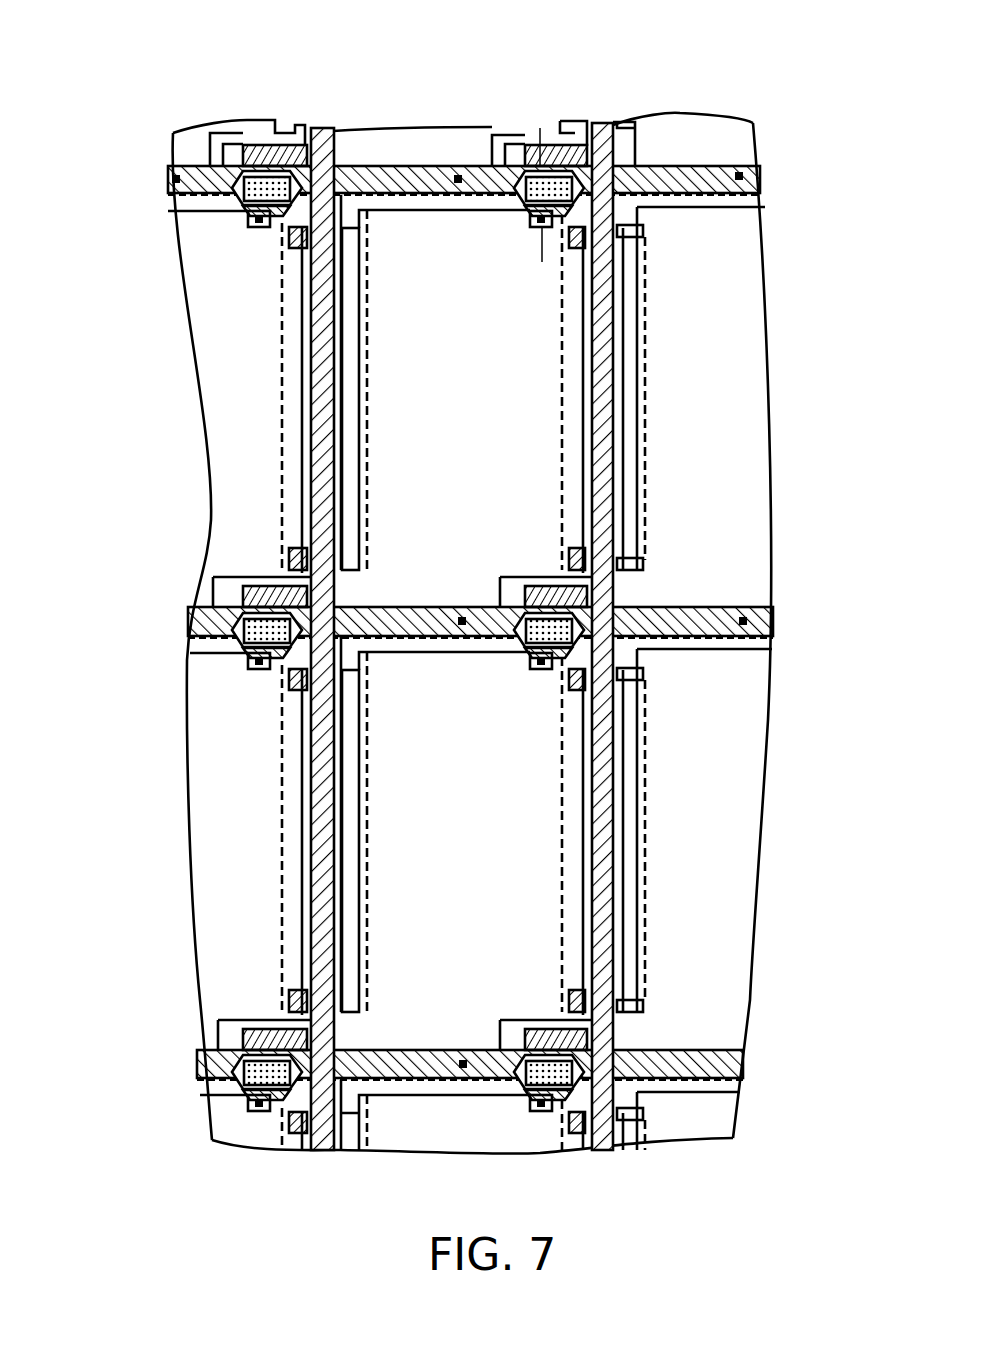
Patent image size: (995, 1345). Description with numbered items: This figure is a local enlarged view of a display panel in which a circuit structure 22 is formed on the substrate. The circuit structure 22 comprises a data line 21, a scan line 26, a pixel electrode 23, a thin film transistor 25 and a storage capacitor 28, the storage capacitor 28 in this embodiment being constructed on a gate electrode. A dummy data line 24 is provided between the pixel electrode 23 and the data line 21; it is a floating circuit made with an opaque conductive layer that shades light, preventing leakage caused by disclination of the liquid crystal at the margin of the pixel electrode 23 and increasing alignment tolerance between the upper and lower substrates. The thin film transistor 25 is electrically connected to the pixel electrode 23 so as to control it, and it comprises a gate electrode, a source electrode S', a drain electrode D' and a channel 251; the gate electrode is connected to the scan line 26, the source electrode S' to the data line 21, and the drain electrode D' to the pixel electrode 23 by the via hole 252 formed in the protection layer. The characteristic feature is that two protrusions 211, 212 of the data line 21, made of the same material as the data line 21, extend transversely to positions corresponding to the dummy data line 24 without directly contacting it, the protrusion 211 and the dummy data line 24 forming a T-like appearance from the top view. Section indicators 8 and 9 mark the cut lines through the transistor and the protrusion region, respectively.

The data line 21 is at (308, 127).
The protrusion 211 is at (643, 235).
The protrusion 212 is at (643, 562).
The circuit structure 22 is at (443, 88).
The pixel electrode 23 is at (443, 224).
The dummy data line 24 is at (582, 350).
The thin film transistor 25 is at (577, 88).
The channel 251 is at (548, 145).
The via hole 252 is at (536, 228).
The scan line 26 is at (222, 148).
The storage capacitor 28 is at (402, 603).
The section line 8- 8 is at (540, 110).
The section line 9- 9 is at (645, 680).
The source electrode S' is at (520, 94).
The drain electrode D' is at (543, 282).